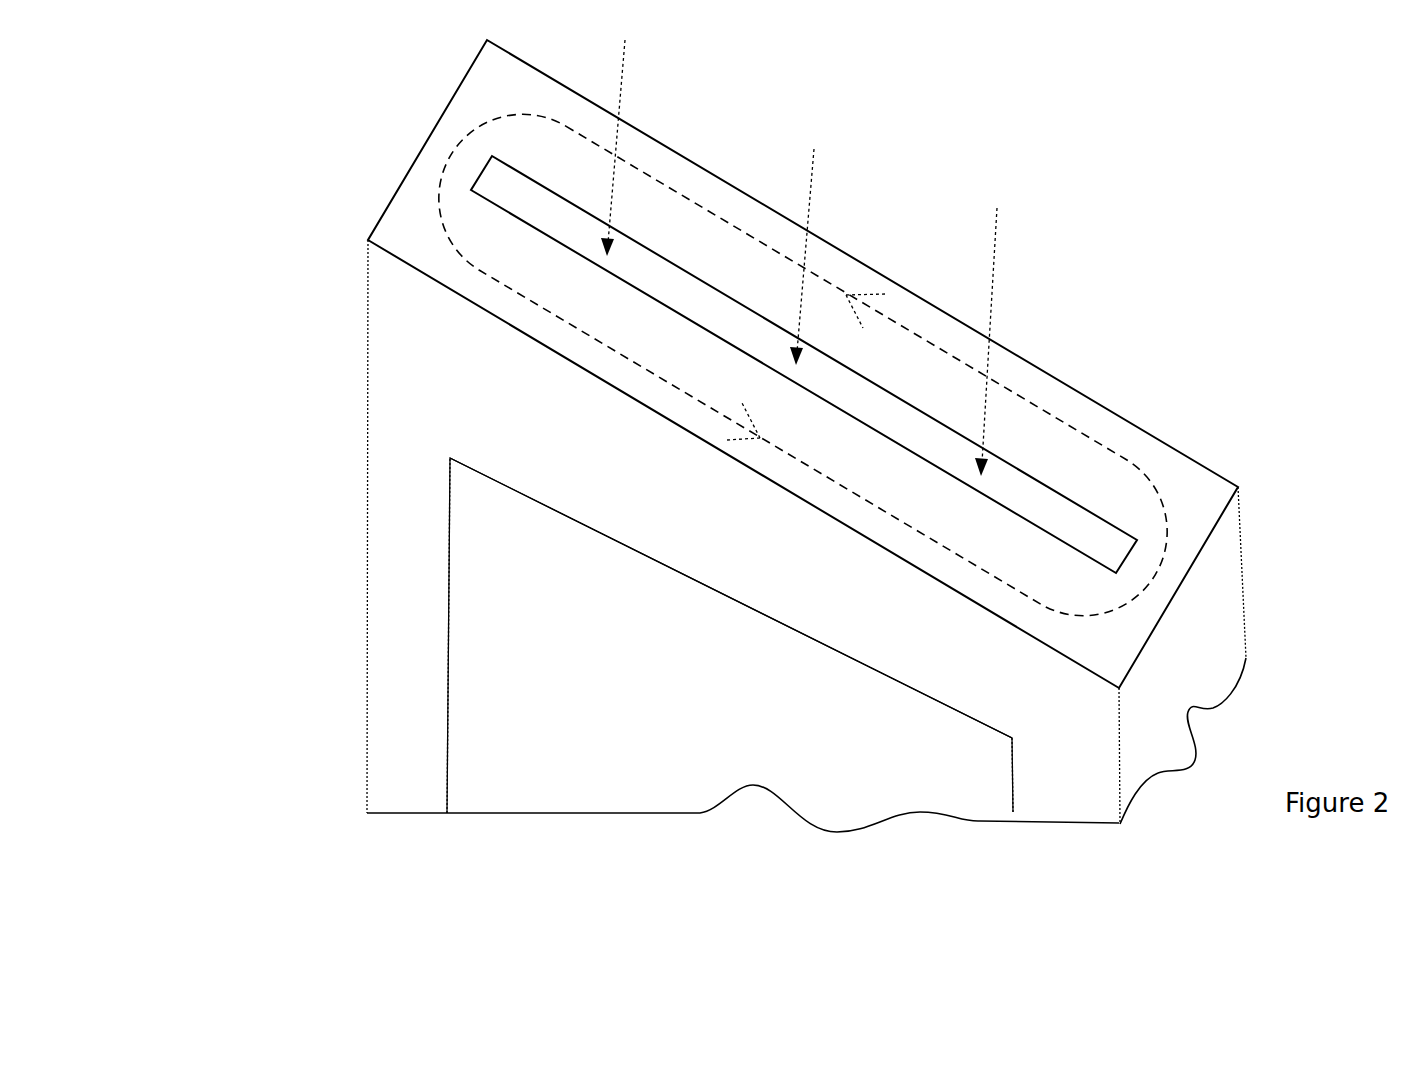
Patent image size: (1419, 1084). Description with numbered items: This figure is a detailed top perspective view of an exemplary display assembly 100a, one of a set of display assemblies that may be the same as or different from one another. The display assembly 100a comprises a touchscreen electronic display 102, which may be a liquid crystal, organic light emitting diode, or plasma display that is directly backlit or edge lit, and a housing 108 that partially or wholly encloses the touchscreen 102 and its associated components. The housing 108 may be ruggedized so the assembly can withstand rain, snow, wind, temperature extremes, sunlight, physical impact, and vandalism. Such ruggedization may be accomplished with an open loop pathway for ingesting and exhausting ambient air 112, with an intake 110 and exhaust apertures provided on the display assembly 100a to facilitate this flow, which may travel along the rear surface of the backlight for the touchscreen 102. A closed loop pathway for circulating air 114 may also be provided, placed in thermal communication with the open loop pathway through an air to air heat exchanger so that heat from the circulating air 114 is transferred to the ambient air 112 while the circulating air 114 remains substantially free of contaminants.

The display assembly 100a is at (275, 121).
The touchscreen electronic display 102 is at (490, 740).
The housing 108 is at (398, 410).
The intake 110 is at (520, 190).
The ambient air 112 is at (997, 273).
The circulating air 114 is at (1087, 465).